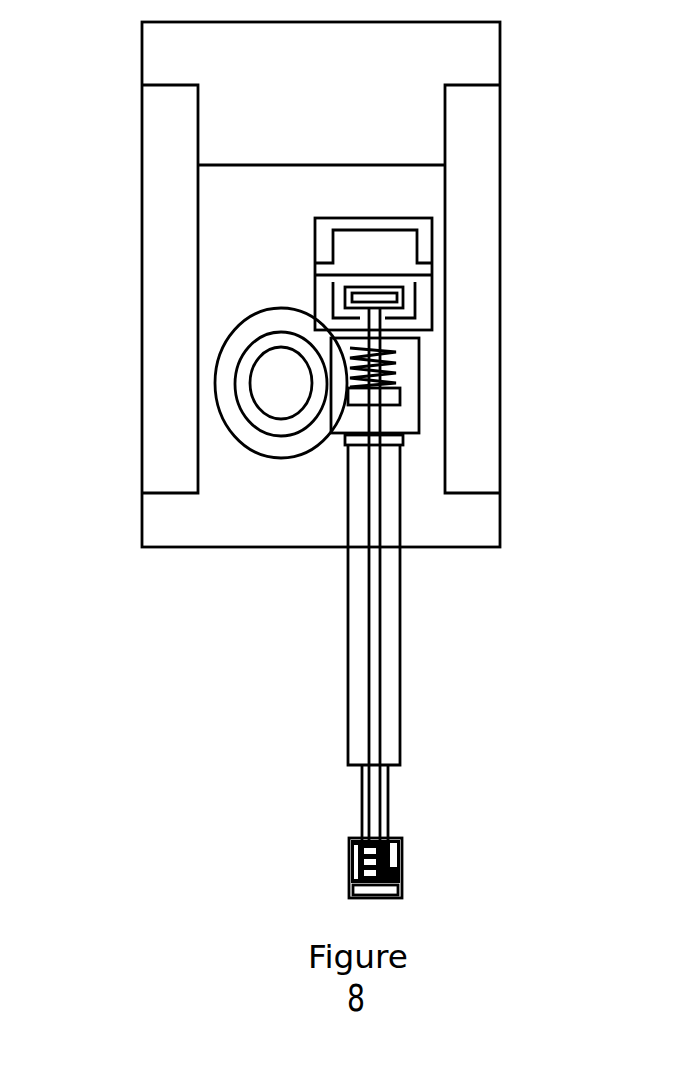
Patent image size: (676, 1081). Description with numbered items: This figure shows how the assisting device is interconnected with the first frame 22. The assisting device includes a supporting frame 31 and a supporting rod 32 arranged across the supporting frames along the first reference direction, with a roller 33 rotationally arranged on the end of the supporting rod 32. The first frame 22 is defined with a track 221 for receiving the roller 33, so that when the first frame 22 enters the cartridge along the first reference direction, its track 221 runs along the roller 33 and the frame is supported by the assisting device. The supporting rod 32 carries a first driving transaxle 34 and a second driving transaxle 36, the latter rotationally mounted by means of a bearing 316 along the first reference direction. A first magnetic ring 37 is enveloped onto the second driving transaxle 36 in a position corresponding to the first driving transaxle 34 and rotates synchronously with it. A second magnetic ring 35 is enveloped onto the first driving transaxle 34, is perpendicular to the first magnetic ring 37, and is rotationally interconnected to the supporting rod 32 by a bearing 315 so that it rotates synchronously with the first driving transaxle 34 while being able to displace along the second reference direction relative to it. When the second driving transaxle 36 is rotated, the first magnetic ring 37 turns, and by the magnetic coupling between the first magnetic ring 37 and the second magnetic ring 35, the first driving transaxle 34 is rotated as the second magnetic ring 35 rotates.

The supporting frame 31 is at (225, 227).
The second driving transaxle 36 is at (272, 373).
The first magnetic ring 37 is at (237, 378).
The bearing 316 is at (222, 410).
The second magnetic ring 35 is at (420, 377).
The bearing 315 is at (414, 430).
The first driving transaxle 34 is at (377, 687).
The supporting rod 32 is at (360, 747).
The track 221 is at (350, 840).
The roller 33 is at (350, 845).
The first frame 22 is at (350, 880).